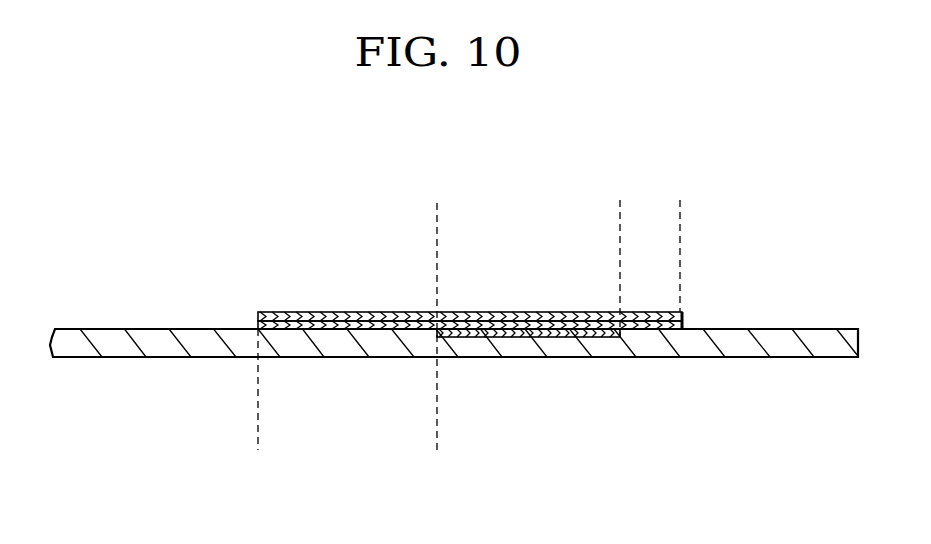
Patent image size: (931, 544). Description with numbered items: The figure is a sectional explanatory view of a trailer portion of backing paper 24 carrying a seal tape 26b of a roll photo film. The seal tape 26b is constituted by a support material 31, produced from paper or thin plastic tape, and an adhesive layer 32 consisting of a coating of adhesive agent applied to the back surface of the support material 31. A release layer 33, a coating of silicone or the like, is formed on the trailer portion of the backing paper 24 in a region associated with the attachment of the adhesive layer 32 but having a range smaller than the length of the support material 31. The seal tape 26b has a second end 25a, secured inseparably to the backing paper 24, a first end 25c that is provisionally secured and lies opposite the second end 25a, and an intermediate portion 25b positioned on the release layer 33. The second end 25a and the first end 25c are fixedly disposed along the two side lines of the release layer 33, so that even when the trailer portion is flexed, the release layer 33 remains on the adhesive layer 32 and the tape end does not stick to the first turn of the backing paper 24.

The backing paper 24 is at (155, 345).
The second end 25a is at (437, 440).
The intermediate portion 25b is at (437, 218).
The first end 25c is at (717, 218).
The seal tape 26b is at (333, 256).
The support material 31 is at (655, 312).
The adhesive layer 32 is at (675, 327).
The release layer 33 is at (525, 340).